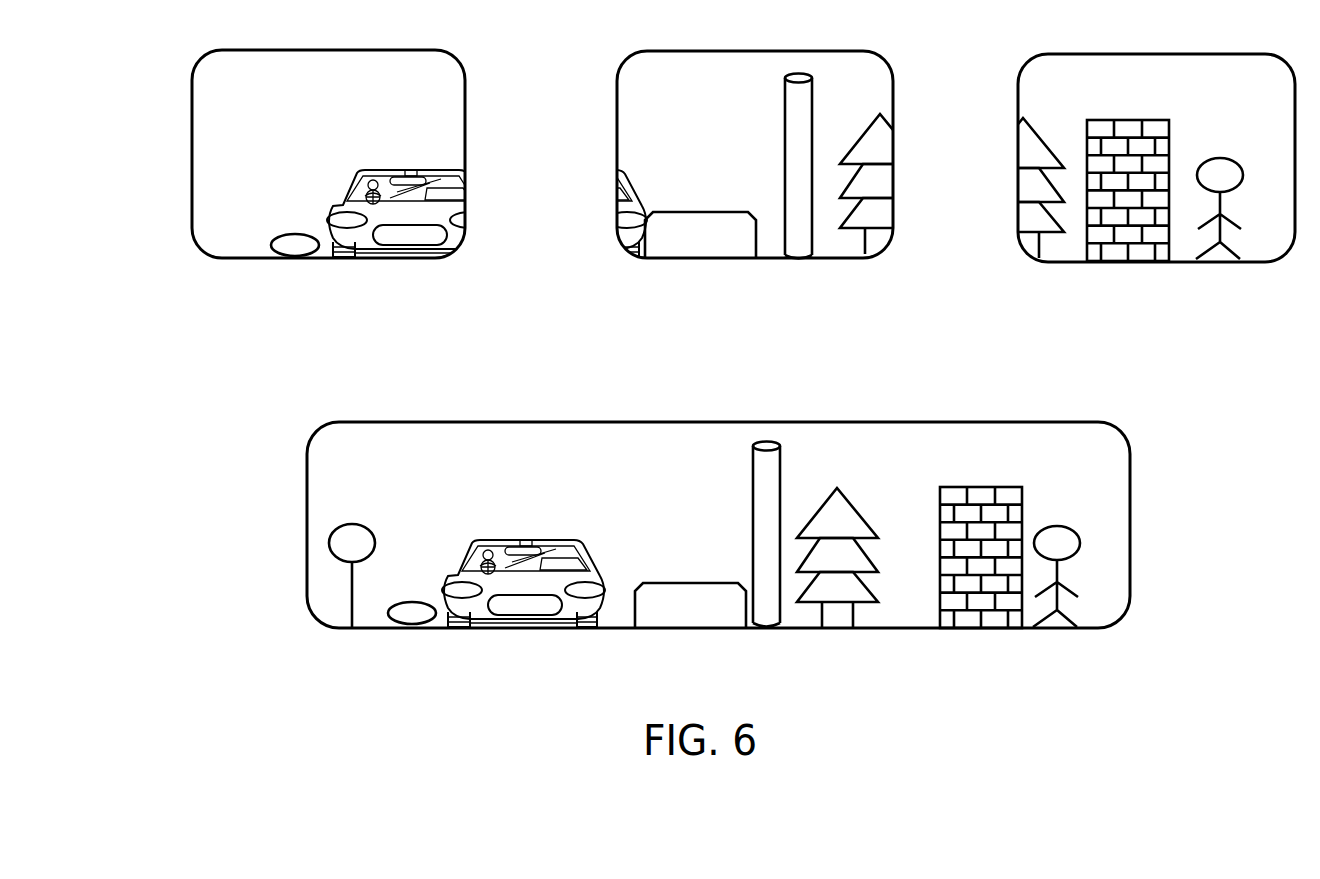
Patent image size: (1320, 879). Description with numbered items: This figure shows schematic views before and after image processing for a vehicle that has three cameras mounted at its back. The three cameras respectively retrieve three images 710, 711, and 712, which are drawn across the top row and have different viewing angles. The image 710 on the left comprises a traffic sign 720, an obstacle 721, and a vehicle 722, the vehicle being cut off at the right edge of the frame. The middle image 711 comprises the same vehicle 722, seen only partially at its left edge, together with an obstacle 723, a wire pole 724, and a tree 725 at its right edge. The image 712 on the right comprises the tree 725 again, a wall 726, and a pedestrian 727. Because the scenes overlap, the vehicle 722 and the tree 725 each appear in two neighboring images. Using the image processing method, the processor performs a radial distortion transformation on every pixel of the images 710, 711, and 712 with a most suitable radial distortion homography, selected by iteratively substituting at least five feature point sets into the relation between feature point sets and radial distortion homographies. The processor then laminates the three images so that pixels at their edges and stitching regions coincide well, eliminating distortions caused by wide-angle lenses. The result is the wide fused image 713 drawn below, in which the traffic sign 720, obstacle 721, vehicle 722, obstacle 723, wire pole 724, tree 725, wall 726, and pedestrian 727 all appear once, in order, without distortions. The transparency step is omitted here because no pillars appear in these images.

The image 710 is at (318, 50).
The image 711 is at (740, 56).
The image 712 is at (1088, 58).
The fused image 713 is at (860, 422).
The traffic sign 720 is at (213, 184).
The obstacle 721 is at (291, 260).
The vehicle 722 is at (397, 252).
The obstacle 723 is at (717, 243).
The wire pole 724 is at (793, 247).
The tree 725 is at (873, 240).
The wall 726 is at (1120, 253).
The pedestrian 727 is at (1220, 253).